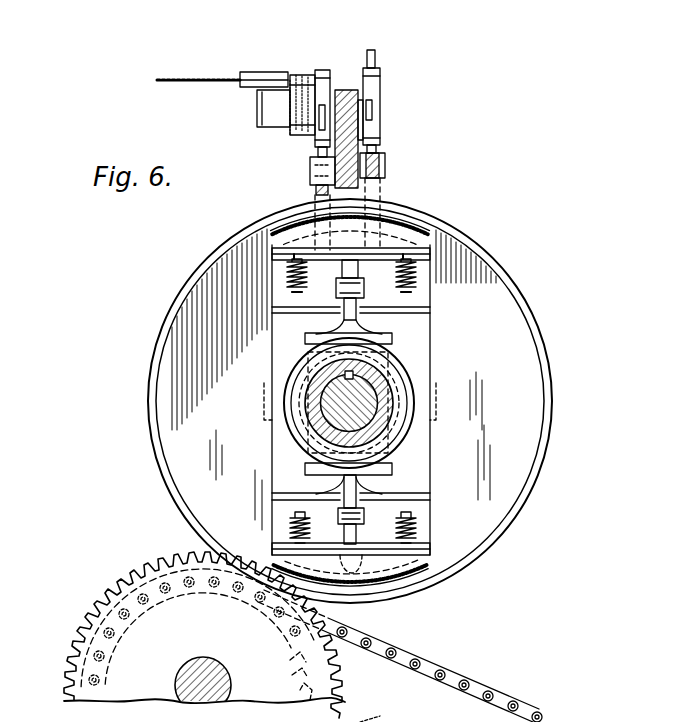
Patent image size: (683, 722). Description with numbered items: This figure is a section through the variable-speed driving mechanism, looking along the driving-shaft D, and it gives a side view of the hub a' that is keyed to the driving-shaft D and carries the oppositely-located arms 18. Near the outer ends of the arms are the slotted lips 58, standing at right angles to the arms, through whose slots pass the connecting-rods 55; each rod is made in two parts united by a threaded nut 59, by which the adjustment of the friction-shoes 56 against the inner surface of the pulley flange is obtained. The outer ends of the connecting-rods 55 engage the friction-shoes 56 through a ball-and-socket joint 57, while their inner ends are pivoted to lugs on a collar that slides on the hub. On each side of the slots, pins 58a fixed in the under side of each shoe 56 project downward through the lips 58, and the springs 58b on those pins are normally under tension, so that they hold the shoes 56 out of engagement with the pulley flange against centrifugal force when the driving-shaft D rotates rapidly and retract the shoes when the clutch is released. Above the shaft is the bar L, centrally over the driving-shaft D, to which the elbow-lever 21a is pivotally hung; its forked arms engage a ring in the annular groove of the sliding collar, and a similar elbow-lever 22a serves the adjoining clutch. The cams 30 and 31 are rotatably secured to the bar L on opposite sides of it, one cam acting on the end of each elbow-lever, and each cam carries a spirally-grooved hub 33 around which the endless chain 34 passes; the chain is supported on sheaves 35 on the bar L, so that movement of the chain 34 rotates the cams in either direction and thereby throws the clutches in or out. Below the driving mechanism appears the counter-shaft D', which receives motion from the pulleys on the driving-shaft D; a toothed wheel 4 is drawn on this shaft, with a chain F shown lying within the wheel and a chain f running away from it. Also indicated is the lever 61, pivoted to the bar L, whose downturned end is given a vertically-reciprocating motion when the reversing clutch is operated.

The chain 34 is at (183, 80).
The sheaves 35 is at (255, 72).
The cam 30 is at (322, 70).
The bar L is at (346, 90).
The cam 31 is at (380, 83).
The spirally-grooved hub 33 is at (300, 120).
The elbow-lever 21a is at (316, 187).
The stud 22a is at (385, 172).
The ball-and-socket joint 57 is at (345, 240).
The friction-shoes 56 is at (385, 240).
The lips 58 is at (418, 257).
The springs 58b is at (415, 273).
The pins 58a is at (415, 284).
The arms 18 is at (272, 307).
The connecting-rods 55 is at (333, 321).
The nut 59 is at (425, 312).
The hub a' is at (469, 387).
The driving-shaft D is at (459, 403).
The sprocket 4 is at (129, 576).
The chain F is at (143, 663).
The chain f is at (432, 669).
The counter-shaft D' is at (204, 689).
The lever 61 is at (397, 710).